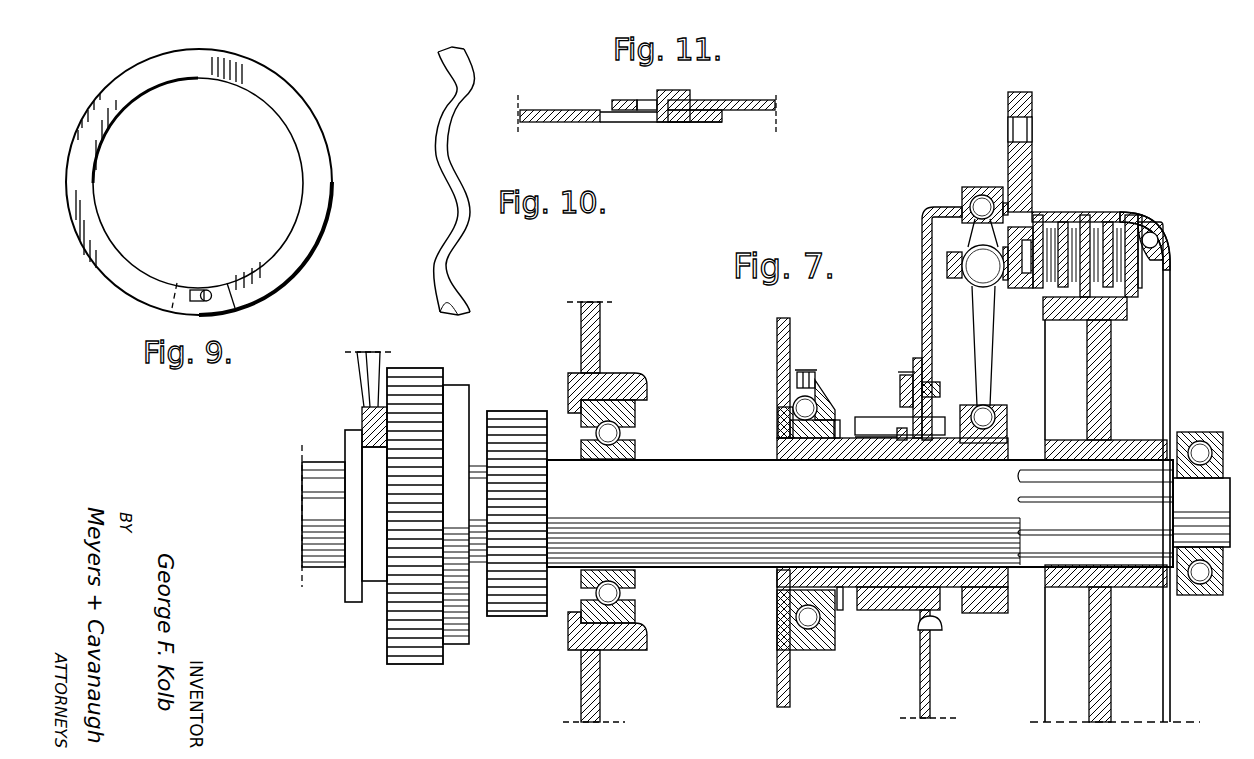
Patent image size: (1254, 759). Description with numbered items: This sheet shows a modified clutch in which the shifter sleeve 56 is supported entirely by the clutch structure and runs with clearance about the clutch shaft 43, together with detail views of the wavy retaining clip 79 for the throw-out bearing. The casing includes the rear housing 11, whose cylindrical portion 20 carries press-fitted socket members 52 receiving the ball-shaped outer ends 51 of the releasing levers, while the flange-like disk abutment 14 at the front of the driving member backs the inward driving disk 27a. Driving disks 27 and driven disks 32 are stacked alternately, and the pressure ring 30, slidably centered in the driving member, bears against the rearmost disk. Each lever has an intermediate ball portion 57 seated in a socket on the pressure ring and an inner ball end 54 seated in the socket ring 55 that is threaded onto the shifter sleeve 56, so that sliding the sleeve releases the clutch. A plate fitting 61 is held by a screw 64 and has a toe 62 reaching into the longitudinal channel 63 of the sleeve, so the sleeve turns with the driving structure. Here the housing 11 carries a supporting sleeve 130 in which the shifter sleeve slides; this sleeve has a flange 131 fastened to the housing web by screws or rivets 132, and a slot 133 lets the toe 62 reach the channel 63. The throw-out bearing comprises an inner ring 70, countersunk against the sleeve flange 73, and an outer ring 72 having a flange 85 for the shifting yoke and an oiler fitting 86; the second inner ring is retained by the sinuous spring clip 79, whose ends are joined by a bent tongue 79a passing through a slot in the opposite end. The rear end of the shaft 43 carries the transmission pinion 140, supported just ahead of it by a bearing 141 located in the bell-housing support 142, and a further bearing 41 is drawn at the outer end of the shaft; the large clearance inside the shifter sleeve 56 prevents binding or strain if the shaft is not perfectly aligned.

In FIG. 7, the rear housing 11 is at (922, 225).
In FIG. 7, the disk abutment 14 is at (1165, 228).
In FIG. 7, the cylindrical portion of the rear housing 20 is at (946, 207).
In FIG. 7, the driving disk 27 is at (1104, 232).
In FIG. 7, the inward driving disk 27a is at (1142, 272).
In FIG. 7, the pressure ring 30 is at (1020, 290).
In FIG. 7, the driven disk 32 is at (1063, 235).
In FIG. 7, the ball bearing 41 is at (1185, 433).
In FIG. 7, the clutch shaft 43 is at (740, 553).
In FIG. 7, the outer end of lever 51 is at (982, 196).
In FIG. 7, the socket member 52 is at (972, 195).
In FIG. 7, the inner end of lever 54 is at (978, 408).
In FIG. 7, the socket ring 55 is at (1007, 415).
In FIG. 7, the shifter sleeve 56 is at (777, 444).
In FIG. 7, the ball shaped portion of lever 57 is at (975, 275).
In FIG. 7, the plate fitting 61 is at (915, 372).
In FIG. 7, the toe portion 62 is at (908, 440).
In FIG. 7, the channel 63 is at (877, 440).
In FIG. 7, the screw 64 is at (899, 390).
In FIG. 7, the inner race ring 70 is at (777, 418).
In FIG. 7, the outer race ring 72 is at (820, 395).
In FIG. 7, the sleeve flange 73 is at (777, 597).
In FIG. 9, the spring clip 79 is at (315, 225).
In FIG. 10, the spring clip 79 is at (463, 137).
In FIG. 11, the spring clip 79 is at (552, 110).
In FIG. 7, the spring clip 79 is at (840, 420).
In FIG. 9, the bent tongue 79a is at (205, 293).
In FIG. 11, the bent tongue 79a is at (687, 90).
In FIG. 7, the flange of outer ring 85 is at (777, 337).
In FIG. 7, the oiler fitting 86 is at (806, 370).
In FIG. 7, the supporting sleeve 130 is at (892, 605).
In FIG. 7, the flange of supporting sleeve 131 is at (940, 645).
In FIG. 7, the screws or rivets 132 is at (948, 628).
In FIG. 7, the slot 133 is at (867, 417).
In FIG. 7, the pinion 140 is at (503, 415).
In FIG. 7, the bearing 141 is at (647, 413).
In FIG. 7, the support 142 is at (600, 683).